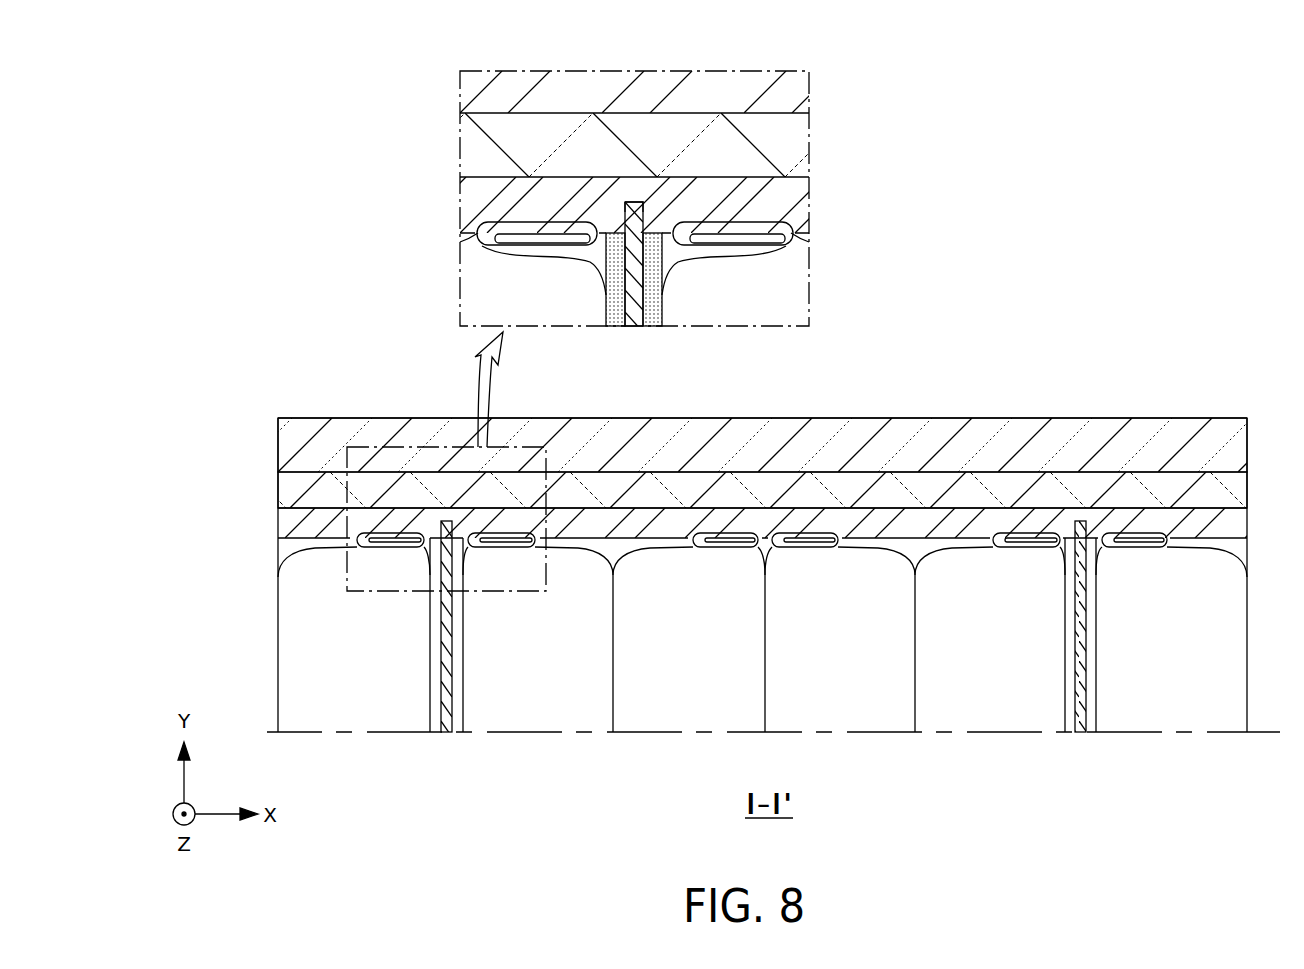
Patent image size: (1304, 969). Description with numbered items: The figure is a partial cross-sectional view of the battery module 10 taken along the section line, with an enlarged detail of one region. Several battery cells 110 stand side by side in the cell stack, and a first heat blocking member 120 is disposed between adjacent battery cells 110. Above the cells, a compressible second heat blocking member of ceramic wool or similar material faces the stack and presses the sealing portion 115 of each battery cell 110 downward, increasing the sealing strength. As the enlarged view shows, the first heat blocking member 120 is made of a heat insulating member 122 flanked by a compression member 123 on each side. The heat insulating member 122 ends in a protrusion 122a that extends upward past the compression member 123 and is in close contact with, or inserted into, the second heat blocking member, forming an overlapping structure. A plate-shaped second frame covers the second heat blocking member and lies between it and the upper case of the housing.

The battery module 10 is at (312, 392).
The battery cell 110 is at (992, 717).
The sealing portion 115 is at (530, 222).
The first heat blocking member 120 is at (1082, 520).
The heat insulating member 122 is at (641, 202).
The protrusion 122a is at (633, 205).
The compression member 123 is at (617, 310).